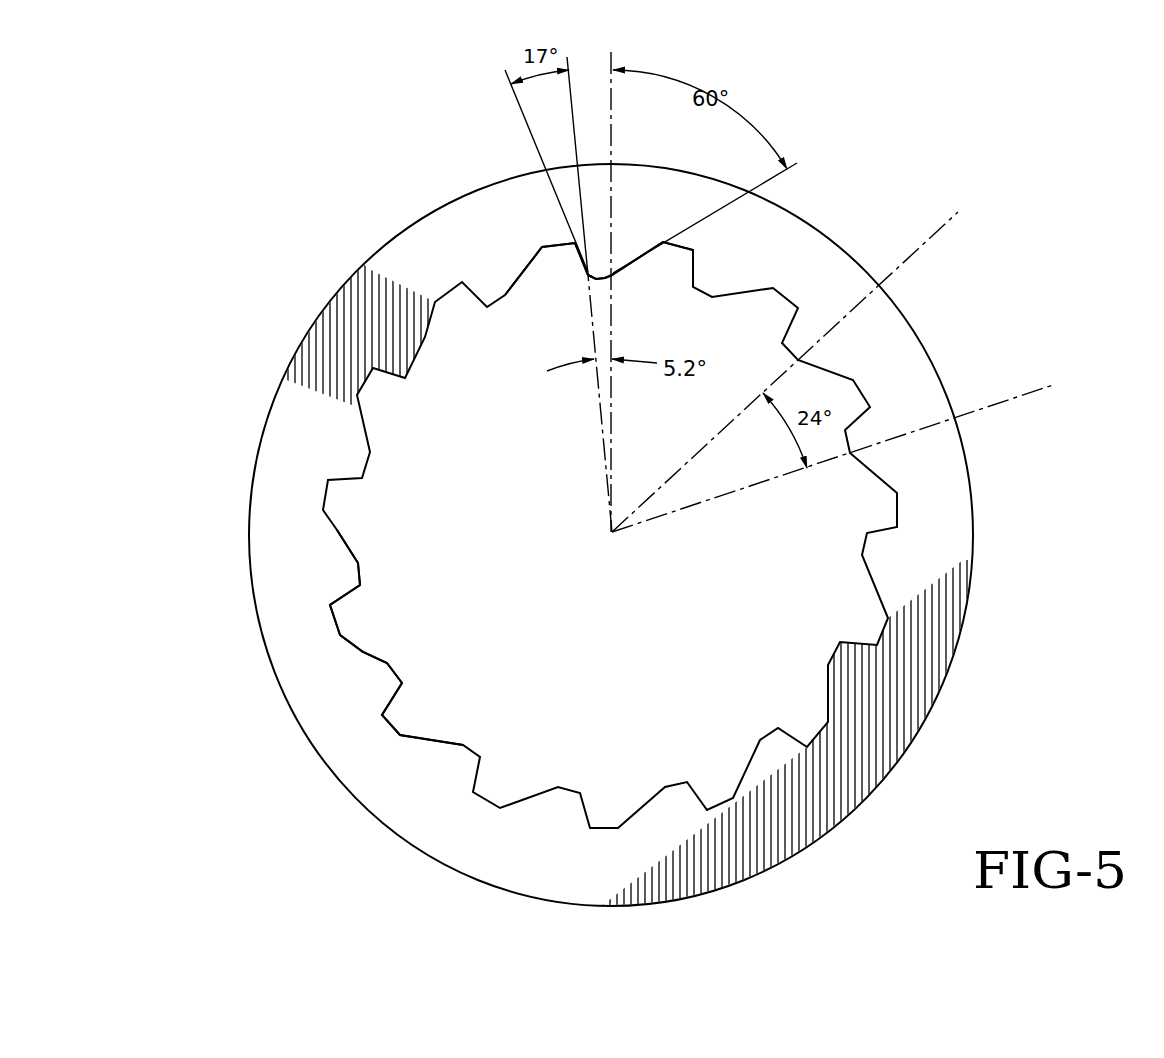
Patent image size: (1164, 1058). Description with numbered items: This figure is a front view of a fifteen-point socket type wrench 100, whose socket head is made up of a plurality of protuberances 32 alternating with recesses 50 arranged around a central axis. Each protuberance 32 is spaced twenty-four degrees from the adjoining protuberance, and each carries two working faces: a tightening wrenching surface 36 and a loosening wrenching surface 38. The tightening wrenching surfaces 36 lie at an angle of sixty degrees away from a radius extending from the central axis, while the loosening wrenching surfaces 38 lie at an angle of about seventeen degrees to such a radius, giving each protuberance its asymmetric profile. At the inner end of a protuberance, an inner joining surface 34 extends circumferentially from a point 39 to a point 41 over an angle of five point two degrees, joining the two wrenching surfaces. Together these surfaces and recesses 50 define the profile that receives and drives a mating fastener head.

The socket type wrench 100 is at (296, 200).
The protuberance 32 is at (352, 458).
The inner joining surface 34 is at (598, 277).
The tightening wrenching surface 36 is at (347, 590).
The loosening wrenching surface 38 is at (363, 652).
The point 39 is at (588, 276).
The point 41 is at (612, 275).
The recess 50 is at (388, 728).